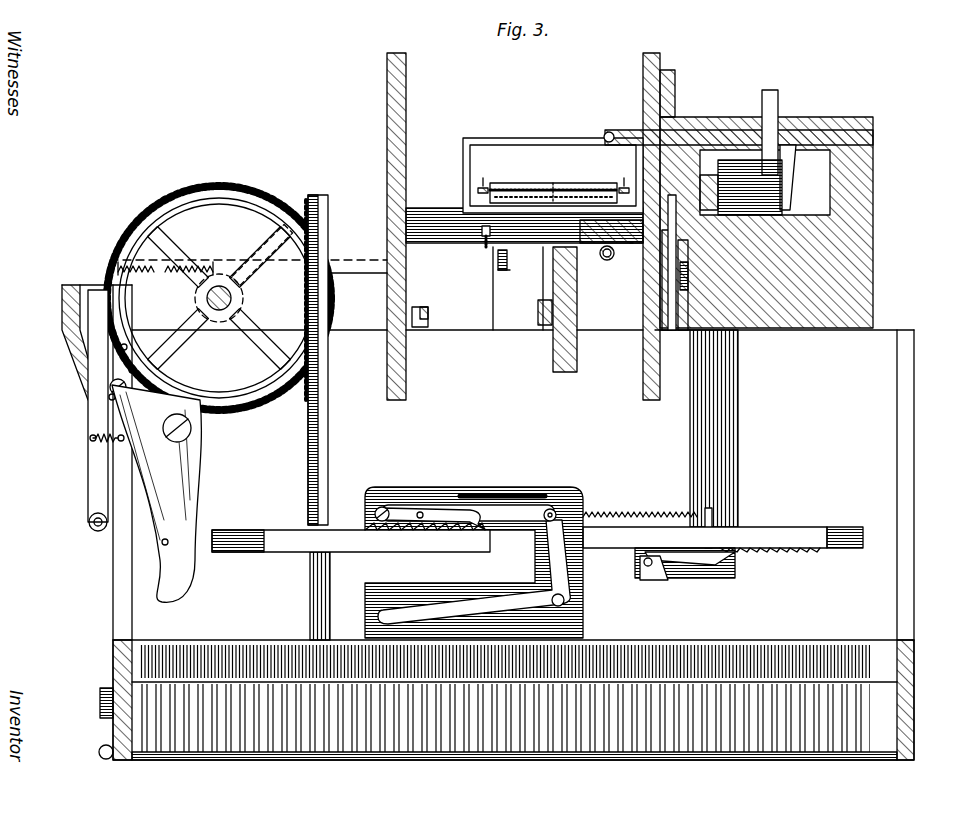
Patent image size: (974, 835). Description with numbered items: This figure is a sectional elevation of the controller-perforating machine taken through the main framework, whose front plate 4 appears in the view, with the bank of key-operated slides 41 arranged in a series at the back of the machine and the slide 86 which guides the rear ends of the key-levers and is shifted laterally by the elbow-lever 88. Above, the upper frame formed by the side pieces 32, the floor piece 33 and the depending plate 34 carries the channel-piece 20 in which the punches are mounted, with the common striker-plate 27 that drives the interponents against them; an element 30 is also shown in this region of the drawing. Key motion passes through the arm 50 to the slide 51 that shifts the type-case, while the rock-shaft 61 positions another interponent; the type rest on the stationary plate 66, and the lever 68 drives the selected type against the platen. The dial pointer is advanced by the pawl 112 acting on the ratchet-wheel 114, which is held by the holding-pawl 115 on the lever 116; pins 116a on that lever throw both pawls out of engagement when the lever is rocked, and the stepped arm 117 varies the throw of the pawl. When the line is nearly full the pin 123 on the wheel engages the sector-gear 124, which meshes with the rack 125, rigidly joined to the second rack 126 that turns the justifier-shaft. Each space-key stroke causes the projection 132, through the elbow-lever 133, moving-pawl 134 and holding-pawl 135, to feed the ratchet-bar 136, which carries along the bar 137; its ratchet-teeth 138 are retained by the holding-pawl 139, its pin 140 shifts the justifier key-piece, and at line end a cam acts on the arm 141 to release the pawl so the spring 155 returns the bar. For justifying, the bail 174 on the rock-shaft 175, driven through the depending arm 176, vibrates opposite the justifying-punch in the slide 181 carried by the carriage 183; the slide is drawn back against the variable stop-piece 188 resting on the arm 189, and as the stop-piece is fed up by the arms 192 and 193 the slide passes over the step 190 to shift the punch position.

The front plate 4 is at (512, 450).
The channel-piece 20 is at (538, 180).
The striker-plate 27 is at (553, 171).
The rod 30 is at (546, 282).
The side pieces 32 is at (406, 96).
The base or floor piece 33 is at (633, 245).
The depending plate 34 is at (577, 358).
The slides 41 is at (252, 652).
The arm 50 is at (490, 308).
The slide 51 is at (484, 238).
The rock-shaft 61 is at (605, 262).
The stationary plate 66 is at (463, 288).
The lever 68 is at (517, 261).
The slide 86 is at (858, 717).
The elbow-lever 88 is at (106, 758).
The pawl 112 is at (88, 458).
The ratchet-wheel 114 is at (209, 198).
The holding-pawl 115 is at (108, 378).
The lever 116 is at (196, 462).
The pins 116a is at (138, 349).
The arm 117 is at (113, 598).
The pin 123 is at (270, 350).
The sector-gear 124 is at (270, 312).
The rack 125 is at (308, 205).
The second rack 126 is at (310, 495).
The projection 132 is at (457, 562).
The elbow-lever 133 is at (474, 572).
The moving-pawl 134 is at (516, 521).
The holding-pawl 135 is at (400, 510).
The ratchet-bar 136 is at (376, 540).
The bar 137 is at (723, 537).
The ratchet-teeth 138 is at (788, 550).
The holding-pawl 139 is at (690, 568).
The pin 140 is at (712, 515).
The arm 141 is at (648, 580).
The spring 155 is at (640, 502).
The bail 174 is at (538, 142).
The rock-shaft 175 is at (434, 208).
The depending arm 176 is at (665, 307).
The slide 181 is at (628, 130).
The carriage 183 is at (860, 134).
The variable stop-piece 188 is at (762, 100).
The arm 189 is at (741, 187).
The step 190 is at (784, 125).
The arm 192 is at (676, 243).
The arm 193 is at (690, 273).